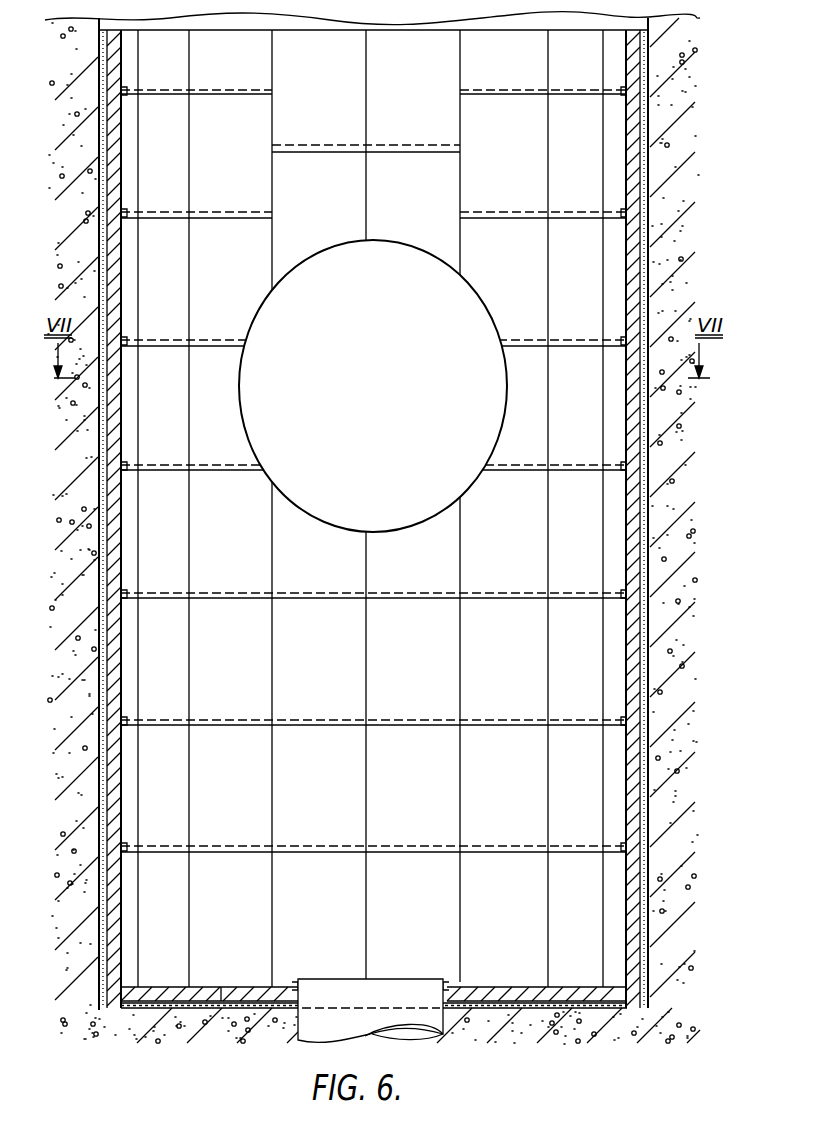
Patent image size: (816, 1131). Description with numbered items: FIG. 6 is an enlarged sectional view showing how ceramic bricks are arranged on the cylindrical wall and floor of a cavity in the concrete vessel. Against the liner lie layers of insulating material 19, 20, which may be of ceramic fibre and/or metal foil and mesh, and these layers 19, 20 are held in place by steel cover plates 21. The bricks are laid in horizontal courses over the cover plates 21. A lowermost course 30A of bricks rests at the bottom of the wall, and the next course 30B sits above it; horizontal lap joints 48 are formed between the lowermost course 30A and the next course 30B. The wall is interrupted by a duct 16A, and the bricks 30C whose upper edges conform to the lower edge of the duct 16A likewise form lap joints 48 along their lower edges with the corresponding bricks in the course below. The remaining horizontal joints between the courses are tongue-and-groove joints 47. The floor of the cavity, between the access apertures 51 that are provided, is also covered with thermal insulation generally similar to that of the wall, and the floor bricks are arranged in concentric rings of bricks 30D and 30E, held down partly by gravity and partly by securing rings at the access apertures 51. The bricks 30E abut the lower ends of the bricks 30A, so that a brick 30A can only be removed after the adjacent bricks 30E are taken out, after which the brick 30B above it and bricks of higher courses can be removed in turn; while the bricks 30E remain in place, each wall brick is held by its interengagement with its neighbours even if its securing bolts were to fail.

The duct 16A is at (390, 387).
The insulating material layer 19 is at (94, 975).
The insulating material layer 20 is at (187, 1008).
The steel cover plate 21 is at (137, 1004).
The lowermost course of bricks 30A is at (116, 875).
The next course of bricks 30B is at (117, 764).
The bricks conforming to the duct 30C is at (246, 536).
The floor bricks in concentric ring 30D is at (239, 988).
The floor bricks in concentric ring 30E is at (158, 987).
The tongue-and-groove joint 47 is at (117, 465).
The lap joint 48 is at (265, 594).
The access aperture 51 is at (333, 1036).